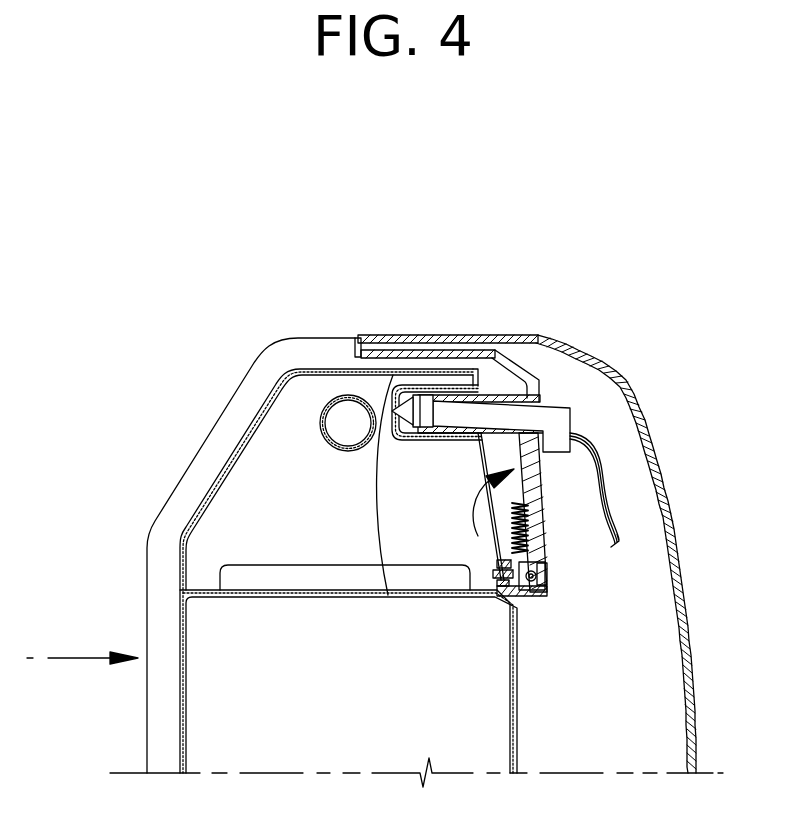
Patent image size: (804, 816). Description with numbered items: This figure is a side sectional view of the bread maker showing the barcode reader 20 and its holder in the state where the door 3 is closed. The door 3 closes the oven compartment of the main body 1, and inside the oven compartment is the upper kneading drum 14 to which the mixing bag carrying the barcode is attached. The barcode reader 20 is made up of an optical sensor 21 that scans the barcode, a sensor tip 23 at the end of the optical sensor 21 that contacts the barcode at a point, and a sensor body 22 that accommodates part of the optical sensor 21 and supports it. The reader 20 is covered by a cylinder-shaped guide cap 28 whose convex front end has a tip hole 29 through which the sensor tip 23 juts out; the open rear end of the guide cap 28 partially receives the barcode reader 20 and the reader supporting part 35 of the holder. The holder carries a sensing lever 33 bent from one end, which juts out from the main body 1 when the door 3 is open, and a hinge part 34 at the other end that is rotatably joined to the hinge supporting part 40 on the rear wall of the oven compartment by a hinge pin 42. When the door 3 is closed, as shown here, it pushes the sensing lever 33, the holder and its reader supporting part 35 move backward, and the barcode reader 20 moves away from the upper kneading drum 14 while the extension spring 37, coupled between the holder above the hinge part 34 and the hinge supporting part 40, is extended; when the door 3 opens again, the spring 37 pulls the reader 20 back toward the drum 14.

The main body 1 is at (588, 348).
The door 3 is at (283, 340).
The upper kneading drum 14 is at (348, 452).
The barcode reader 20 is at (427, 258).
The optical sensor 21 is at (413, 385).
The sensor body 22 is at (492, 413).
The sensor tip 23 is at (399, 362).
The guide cap 28 is at (414, 441).
The tip hole 29 is at (388, 595).
The sensing lever 33 is at (357, 340).
The hinge part 34 is at (547, 570).
The reader supporting part 35 is at (480, 436).
The extension spring 37 is at (528, 528).
The hinge supporting part 40 is at (522, 594).
The hinge pin 42 is at (545, 596).